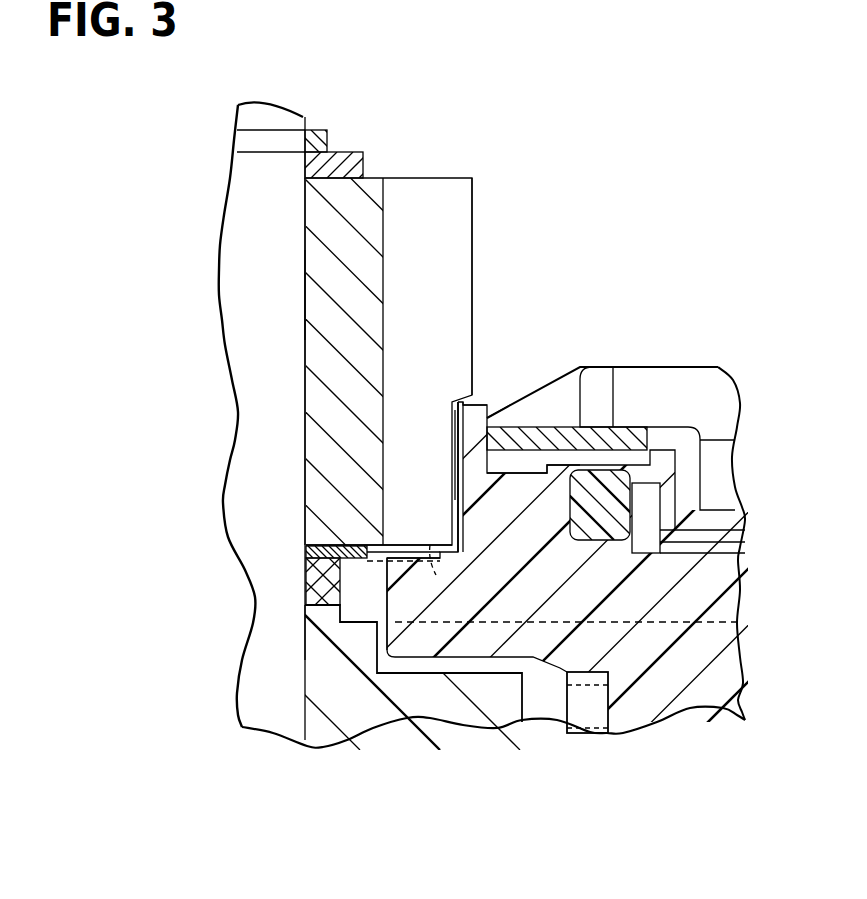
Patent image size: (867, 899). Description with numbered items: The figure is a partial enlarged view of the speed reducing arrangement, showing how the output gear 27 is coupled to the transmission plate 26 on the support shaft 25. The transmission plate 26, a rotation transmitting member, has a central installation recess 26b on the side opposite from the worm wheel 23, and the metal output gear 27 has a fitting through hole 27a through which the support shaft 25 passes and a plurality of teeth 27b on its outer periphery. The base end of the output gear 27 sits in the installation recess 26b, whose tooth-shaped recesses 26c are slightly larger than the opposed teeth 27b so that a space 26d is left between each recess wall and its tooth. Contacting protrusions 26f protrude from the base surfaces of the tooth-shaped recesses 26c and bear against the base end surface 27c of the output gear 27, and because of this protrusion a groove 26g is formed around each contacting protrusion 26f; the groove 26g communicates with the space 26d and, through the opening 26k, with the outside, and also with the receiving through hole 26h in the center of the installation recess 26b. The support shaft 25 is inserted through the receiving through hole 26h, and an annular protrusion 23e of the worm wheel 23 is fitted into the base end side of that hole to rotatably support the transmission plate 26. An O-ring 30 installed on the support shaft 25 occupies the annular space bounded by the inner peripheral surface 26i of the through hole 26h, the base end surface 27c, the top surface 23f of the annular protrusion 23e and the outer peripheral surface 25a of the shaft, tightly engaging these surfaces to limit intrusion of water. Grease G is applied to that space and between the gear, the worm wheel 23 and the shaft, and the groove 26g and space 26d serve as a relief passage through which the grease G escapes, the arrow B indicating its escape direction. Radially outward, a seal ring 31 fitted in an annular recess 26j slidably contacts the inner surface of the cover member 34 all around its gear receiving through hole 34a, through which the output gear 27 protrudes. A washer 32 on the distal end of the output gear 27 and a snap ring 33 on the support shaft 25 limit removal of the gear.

The worm wheel 23 is at (434, 712).
The annular protrusion 23e is at (322, 612).
The top surface of the annular protrusion 23f is at (305, 612).
The support shaft 25 is at (245, 181).
The outer peripheral surface of the support shaft 25a is at (305, 297).
The transmission plate 26 is at (725, 578).
The installation recess 26b is at (462, 402).
The tooth-shaped recess 26c is at (466, 398).
The space 26d is at (470, 500).
The contacting protrusion 26f is at (378, 556).
The groove 26g is at (420, 565).
The receiving through hole 26h is at (348, 626).
The inner peripheral surface of the through hole 26i is at (305, 585).
The annular recess 26j is at (630, 542).
The opening 26k is at (466, 400).
The output gear 27 is at (452, 178).
The fitting through hole 27a is at (305, 248).
The teeth 27b is at (452, 204).
The base end surface of the output gear 27c is at (308, 544).
The O-ring 30 is at (306, 552).
The seal ring 31 is at (566, 432).
The washer 32 is at (358, 152).
The snap ring 33 is at (314, 130).
The cover member 34 is at (700, 427).
The gear receiving through hole 34a is at (510, 427).
The arrow indicating escape direction B is at (456, 456).
The grease G is at (350, 546).